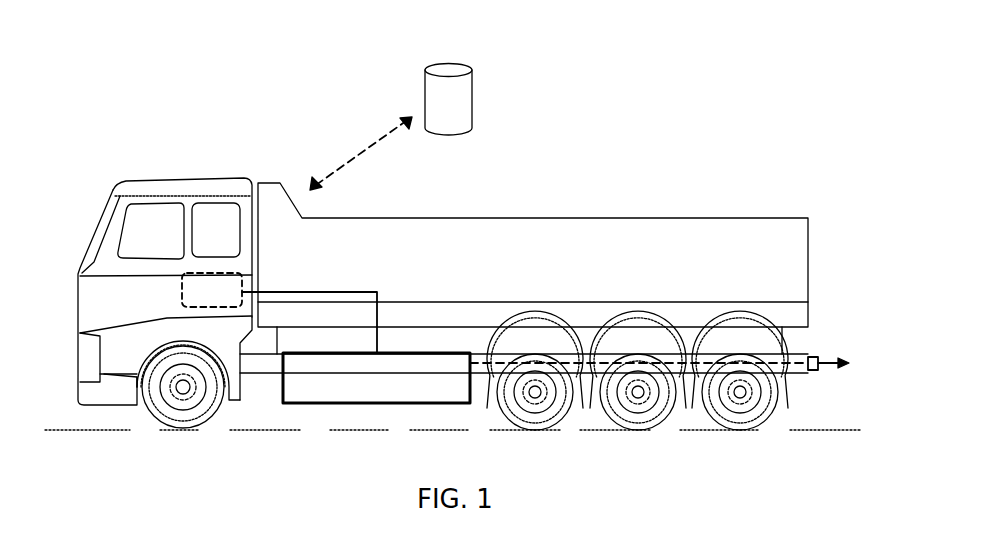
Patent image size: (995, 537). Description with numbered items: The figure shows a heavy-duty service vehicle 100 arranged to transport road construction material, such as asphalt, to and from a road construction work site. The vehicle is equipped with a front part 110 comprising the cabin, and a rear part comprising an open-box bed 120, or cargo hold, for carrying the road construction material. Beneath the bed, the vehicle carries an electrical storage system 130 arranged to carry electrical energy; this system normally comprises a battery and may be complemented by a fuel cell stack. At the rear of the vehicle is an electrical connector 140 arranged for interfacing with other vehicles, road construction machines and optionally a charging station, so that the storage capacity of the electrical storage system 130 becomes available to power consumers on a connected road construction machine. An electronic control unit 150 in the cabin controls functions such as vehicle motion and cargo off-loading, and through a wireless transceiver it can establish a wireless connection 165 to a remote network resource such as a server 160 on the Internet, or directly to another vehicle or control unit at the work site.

The heavy-duty vehicle 100 is at (113, 62).
The front part 110 is at (184, 180).
The open-box bed 120 is at (809, 237).
The electrical storage system 130 is at (402, 384).
The electrical connector 140 is at (815, 372).
The electronic control unit 150 is at (212, 290).
The server 160 is at (473, 103).
The wireless connection 165 is at (361, 153).